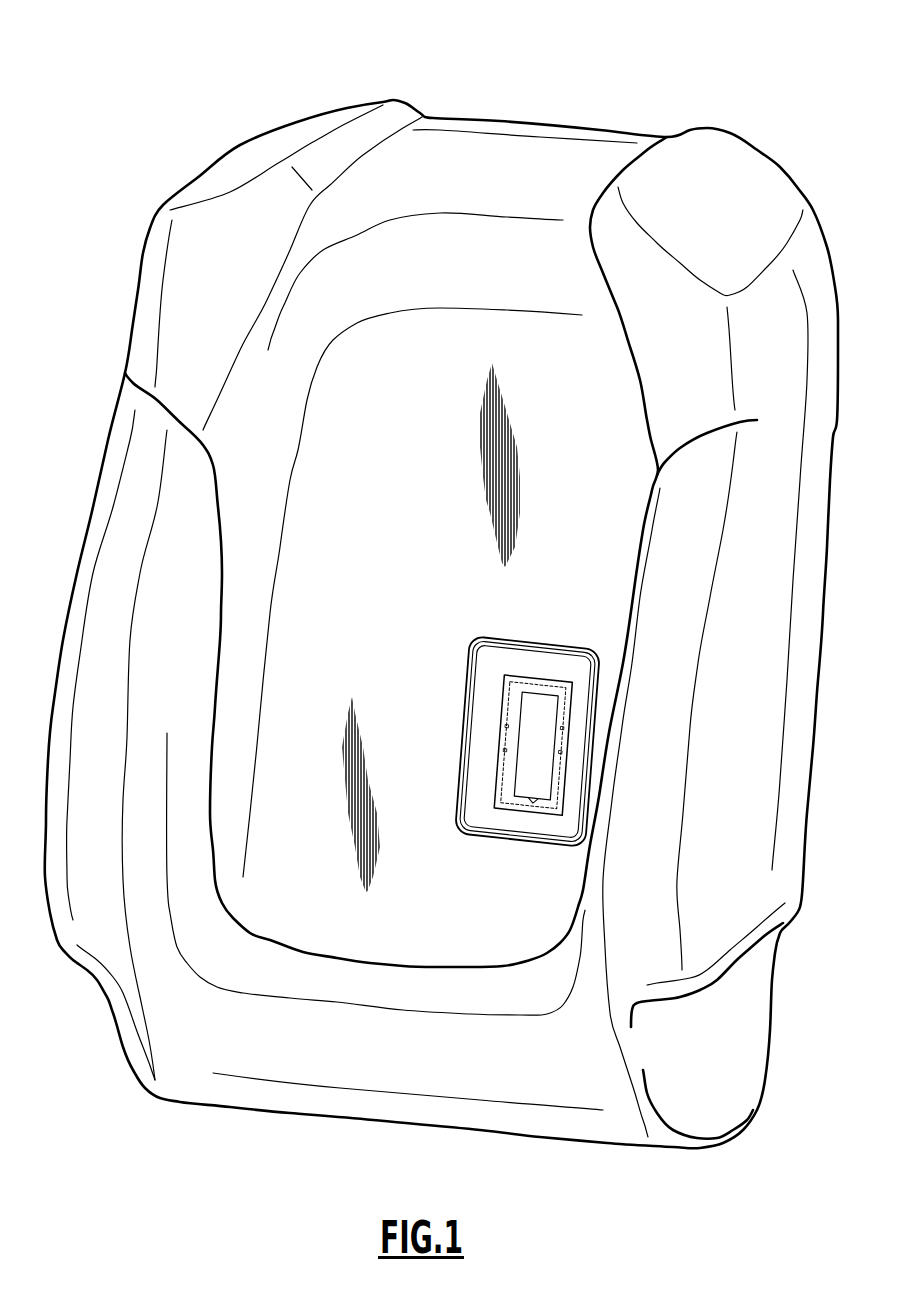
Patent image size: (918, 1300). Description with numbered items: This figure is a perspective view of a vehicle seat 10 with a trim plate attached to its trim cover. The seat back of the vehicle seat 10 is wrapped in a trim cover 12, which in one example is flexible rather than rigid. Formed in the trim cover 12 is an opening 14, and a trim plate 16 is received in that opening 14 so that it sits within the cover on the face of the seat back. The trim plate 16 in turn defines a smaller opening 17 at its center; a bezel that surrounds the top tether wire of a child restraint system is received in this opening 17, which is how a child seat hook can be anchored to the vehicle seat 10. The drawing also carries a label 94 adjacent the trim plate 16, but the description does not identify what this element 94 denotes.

The vehicle seat 10 is at (789, 60).
The trim cover 12 is at (601, 434).
The opening 14 is at (555, 644).
The trim plate 16 is at (578, 697).
The opening 17 is at (527, 758).
The bezel 94 is at (490, 693).